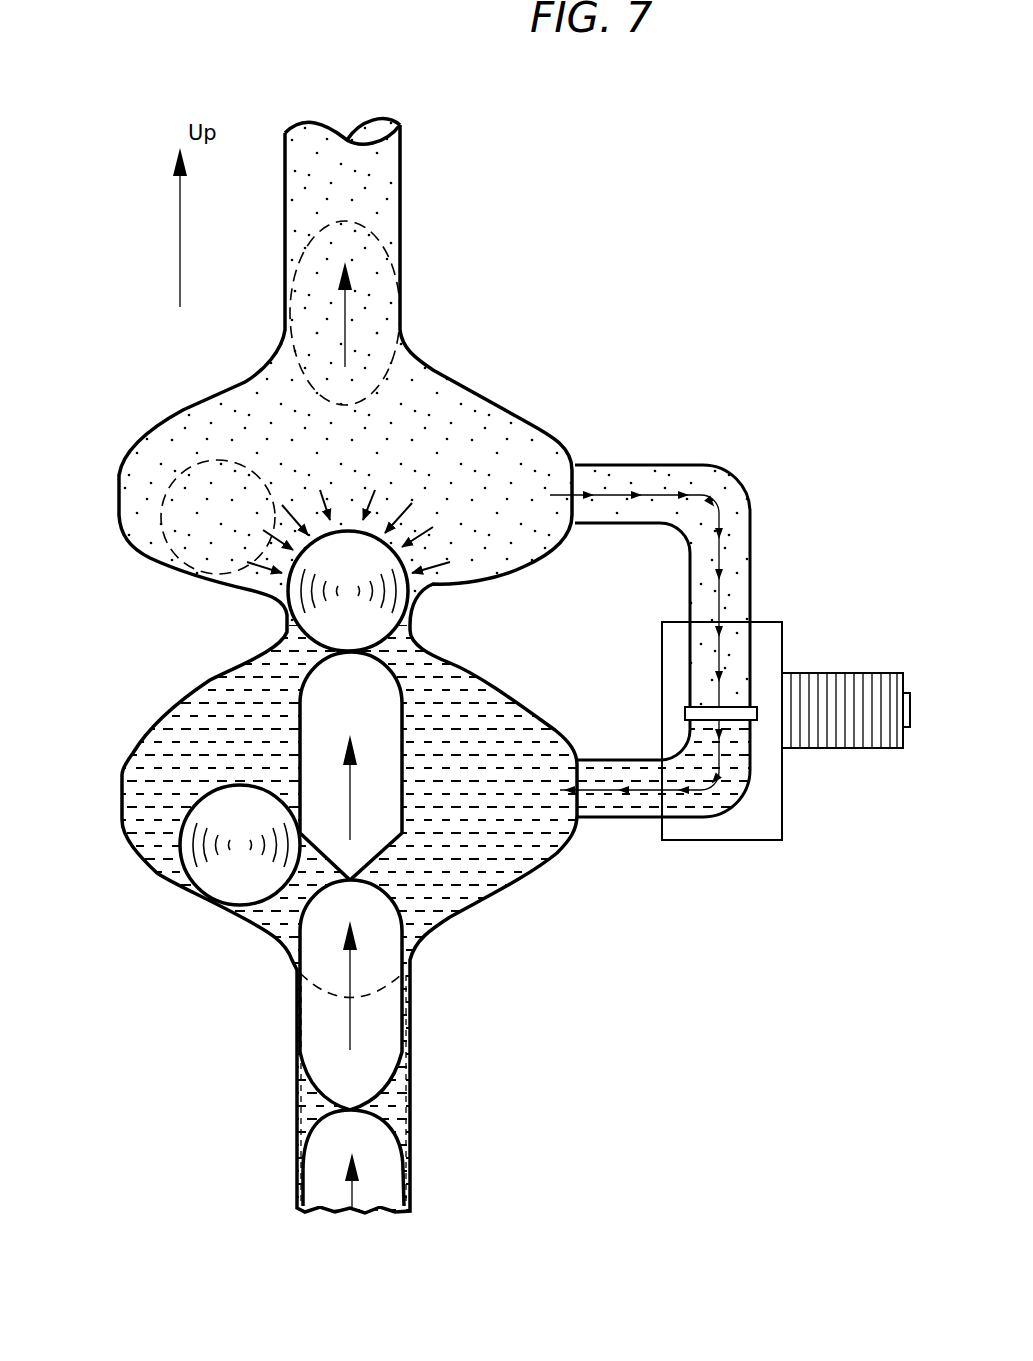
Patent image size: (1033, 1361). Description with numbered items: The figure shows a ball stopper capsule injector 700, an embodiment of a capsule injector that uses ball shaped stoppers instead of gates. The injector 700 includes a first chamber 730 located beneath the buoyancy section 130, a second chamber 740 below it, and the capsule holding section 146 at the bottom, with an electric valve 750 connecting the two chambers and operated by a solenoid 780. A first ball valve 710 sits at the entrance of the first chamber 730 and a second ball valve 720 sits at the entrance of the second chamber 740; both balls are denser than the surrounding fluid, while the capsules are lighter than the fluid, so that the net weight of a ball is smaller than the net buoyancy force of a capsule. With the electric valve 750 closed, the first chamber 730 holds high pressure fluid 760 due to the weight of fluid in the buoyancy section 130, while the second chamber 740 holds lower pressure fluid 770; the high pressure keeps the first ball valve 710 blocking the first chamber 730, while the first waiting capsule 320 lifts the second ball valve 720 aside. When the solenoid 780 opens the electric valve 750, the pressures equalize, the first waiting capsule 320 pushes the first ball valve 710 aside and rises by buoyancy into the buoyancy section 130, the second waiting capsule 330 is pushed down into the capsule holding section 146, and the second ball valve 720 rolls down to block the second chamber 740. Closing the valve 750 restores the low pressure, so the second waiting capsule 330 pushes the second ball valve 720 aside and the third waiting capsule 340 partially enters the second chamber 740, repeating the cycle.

The ball stopper capsule injector 700 is at (740, 282).
The buoyancy section 130 is at (402, 183).
The capsule holding section 146 is at (413, 1062).
The first waiting capsule 320 is at (375, 707).
The second waiting capsule 330 is at (318, 1035).
The third waiting capsule 340 is at (323, 1170).
The first ball valve 710 is at (317, 618).
The second ball valve 720 is at (223, 878).
The first chamber 730 is at (147, 462).
The second chamber 740 is at (120, 797).
The electric valve 750 is at (722, 845).
The high pressure fluid 760 is at (435, 425).
The lower pressure fluid 770 is at (477, 882).
The solenoid 780 is at (810, 673).